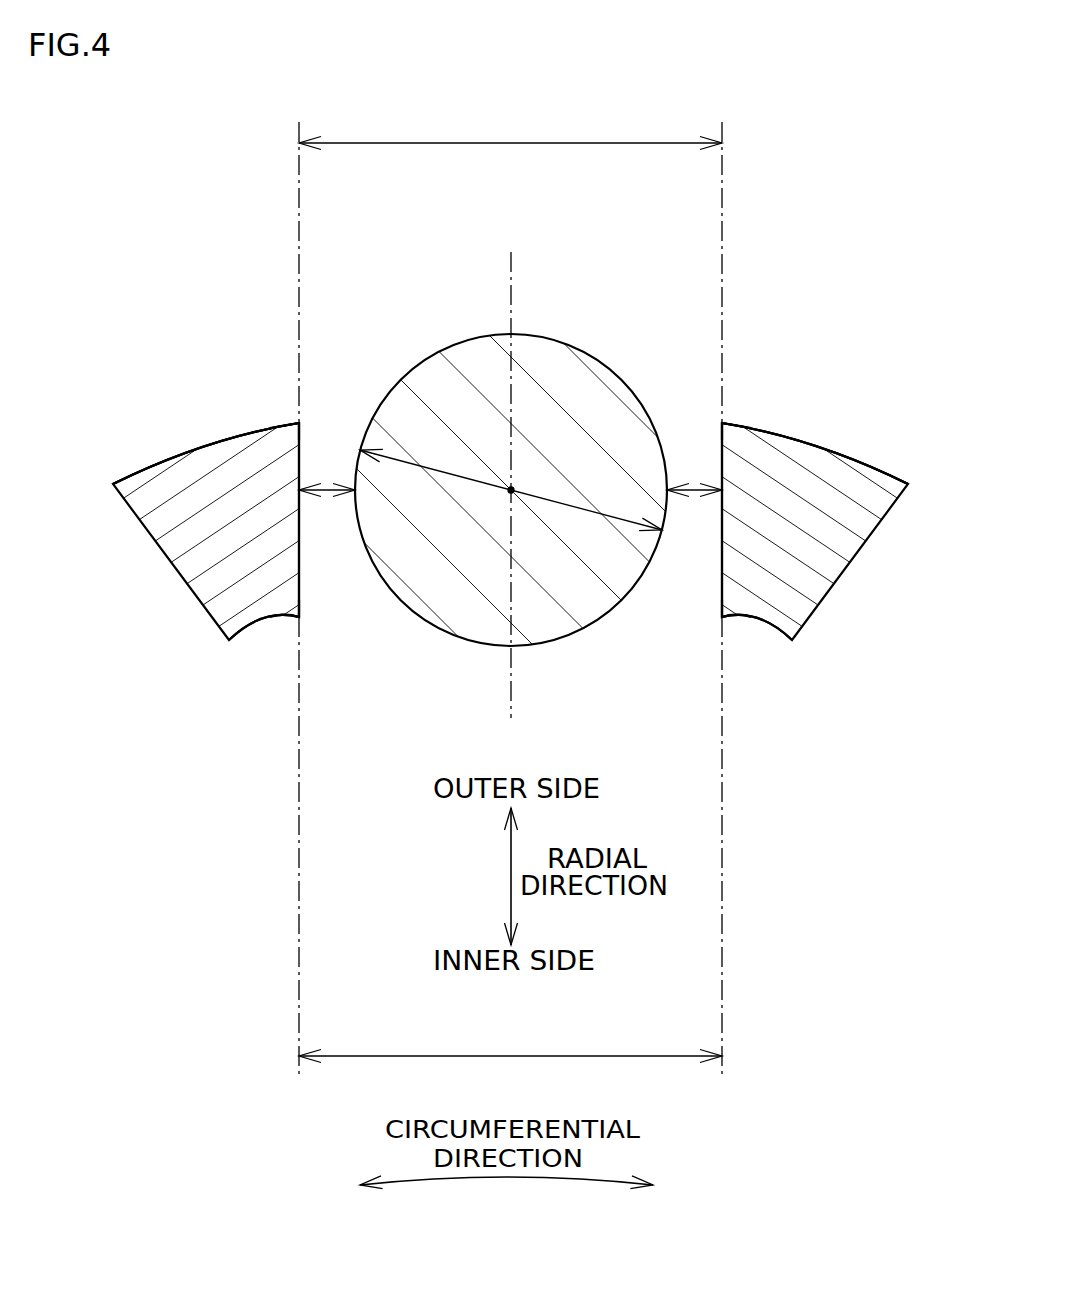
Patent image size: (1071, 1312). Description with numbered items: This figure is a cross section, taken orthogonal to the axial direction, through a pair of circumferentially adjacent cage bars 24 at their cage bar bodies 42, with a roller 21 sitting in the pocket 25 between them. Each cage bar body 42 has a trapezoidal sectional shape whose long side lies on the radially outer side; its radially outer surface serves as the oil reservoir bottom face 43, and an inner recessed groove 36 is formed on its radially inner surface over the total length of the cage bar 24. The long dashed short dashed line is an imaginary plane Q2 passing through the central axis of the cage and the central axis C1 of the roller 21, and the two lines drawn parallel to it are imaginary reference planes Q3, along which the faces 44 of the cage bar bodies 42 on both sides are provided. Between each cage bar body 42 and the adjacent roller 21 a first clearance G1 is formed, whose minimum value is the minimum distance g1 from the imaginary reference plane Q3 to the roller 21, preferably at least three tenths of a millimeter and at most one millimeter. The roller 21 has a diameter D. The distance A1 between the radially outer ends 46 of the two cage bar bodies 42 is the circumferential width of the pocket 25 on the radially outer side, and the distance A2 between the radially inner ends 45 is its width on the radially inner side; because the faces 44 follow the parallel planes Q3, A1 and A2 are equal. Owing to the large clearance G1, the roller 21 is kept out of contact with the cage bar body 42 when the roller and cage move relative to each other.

The roller 21 is at (460, 338).
The cage bar 24 is at (129, 455).
The pocket 25 is at (690, 411).
The inner recessed groove 36 is at (250, 636).
The cage bar body 42 is at (188, 475).
The oil reservoir bottom face 43 is at (220, 443).
The face 44 is at (299, 575).
The radially inner end 45 is at (299, 620).
The radially outer end 46 is at (299, 418).
The distance between radially outer ends A1 is at (510, 129).
The distance between radially inner ends A2 is at (510, 1044).
The central axis of the roller C1 is at (513, 487).
The diameter of the roller D is at (511, 487).
The minimum distance g1 is at (510, 474).
The first clearance G1 is at (341, 586).
The imaginary plane Q2 is at (511, 283).
The imaginary reference plane Q3 is at (299, 240).